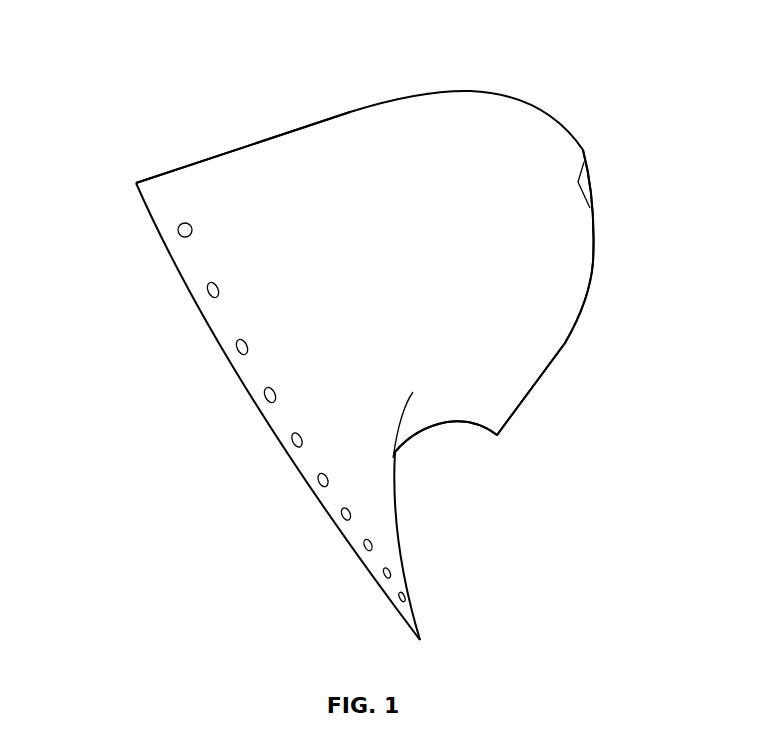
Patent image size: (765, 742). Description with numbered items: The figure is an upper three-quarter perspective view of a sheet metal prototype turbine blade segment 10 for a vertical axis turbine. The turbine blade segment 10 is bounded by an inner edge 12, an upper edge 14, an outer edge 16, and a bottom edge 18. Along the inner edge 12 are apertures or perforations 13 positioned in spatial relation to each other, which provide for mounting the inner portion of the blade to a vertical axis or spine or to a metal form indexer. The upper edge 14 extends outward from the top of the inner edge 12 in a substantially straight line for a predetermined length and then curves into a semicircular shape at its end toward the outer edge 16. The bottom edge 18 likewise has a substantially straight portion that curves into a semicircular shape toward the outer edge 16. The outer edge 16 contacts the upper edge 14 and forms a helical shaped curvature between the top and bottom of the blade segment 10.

The turbine blade segment 10 is at (589, 74).
The inner edge 12 is at (190, 273).
The apertures or perforations 13 is at (183, 223).
The upper edge 14 is at (328, 130).
The outer edge 16 is at (552, 339).
The bottom edge 18 is at (415, 422).